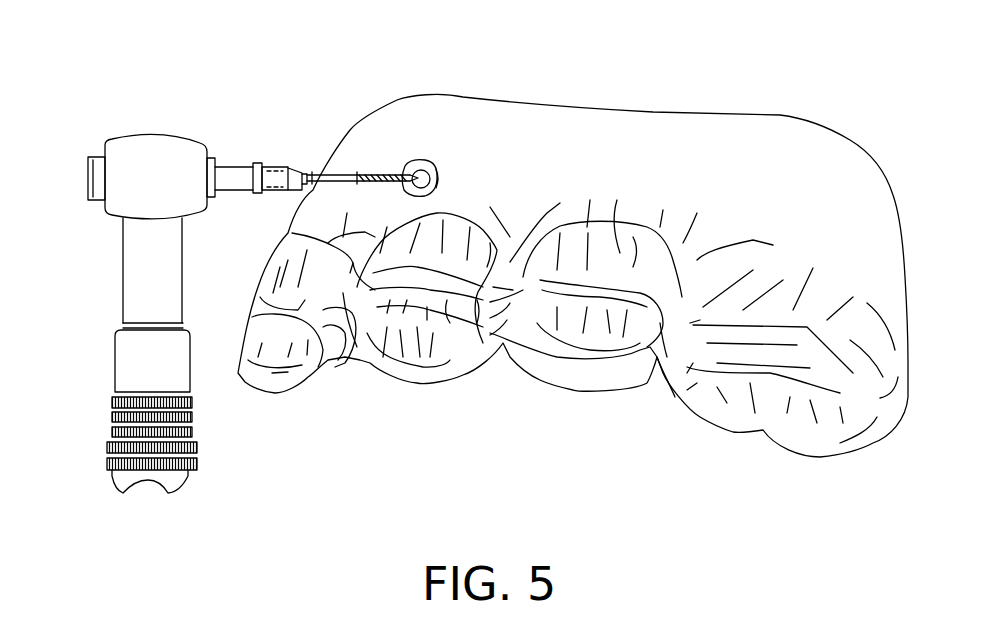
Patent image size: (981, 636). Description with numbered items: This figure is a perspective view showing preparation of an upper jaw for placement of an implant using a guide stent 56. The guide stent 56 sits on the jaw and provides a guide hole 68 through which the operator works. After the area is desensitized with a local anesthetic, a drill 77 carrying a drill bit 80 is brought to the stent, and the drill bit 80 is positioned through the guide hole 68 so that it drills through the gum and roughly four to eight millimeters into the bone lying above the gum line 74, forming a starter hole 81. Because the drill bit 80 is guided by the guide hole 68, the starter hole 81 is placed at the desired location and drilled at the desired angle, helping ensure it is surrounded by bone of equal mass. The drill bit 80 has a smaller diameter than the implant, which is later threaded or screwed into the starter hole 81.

The guide stent 56 is at (817, 153).
The guide hole 68 is at (456, 171).
The gum line 74 is at (320, 250).
The drill 77 is at (140, 283).
The drill bit 80 is at (378, 172).
The starter hole 81 is at (418, 158).